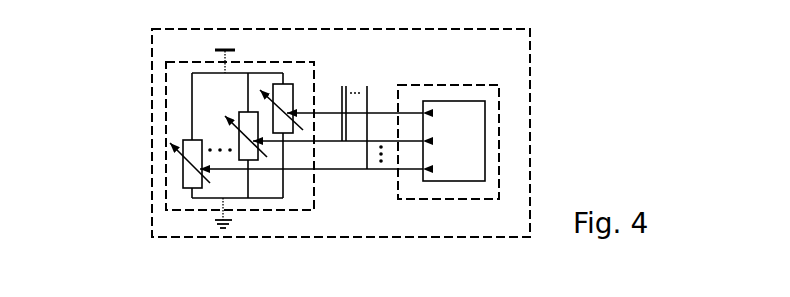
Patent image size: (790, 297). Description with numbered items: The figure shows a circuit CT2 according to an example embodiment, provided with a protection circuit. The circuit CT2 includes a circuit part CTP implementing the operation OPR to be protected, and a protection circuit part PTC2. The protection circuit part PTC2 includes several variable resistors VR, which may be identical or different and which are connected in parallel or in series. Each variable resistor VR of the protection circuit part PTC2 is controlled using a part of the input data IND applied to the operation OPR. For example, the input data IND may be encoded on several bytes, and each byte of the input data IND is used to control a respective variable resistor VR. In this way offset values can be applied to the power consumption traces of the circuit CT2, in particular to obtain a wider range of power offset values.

The circuit CT2 is at (530, 29).
The protection circuit part PTC2 is at (166, 62).
The variable resistor VR is at (290, 84).
The input data IND is at (357, 117).
The circuit part CTP is at (499, 85).
The operation OPR is at (474, 151).